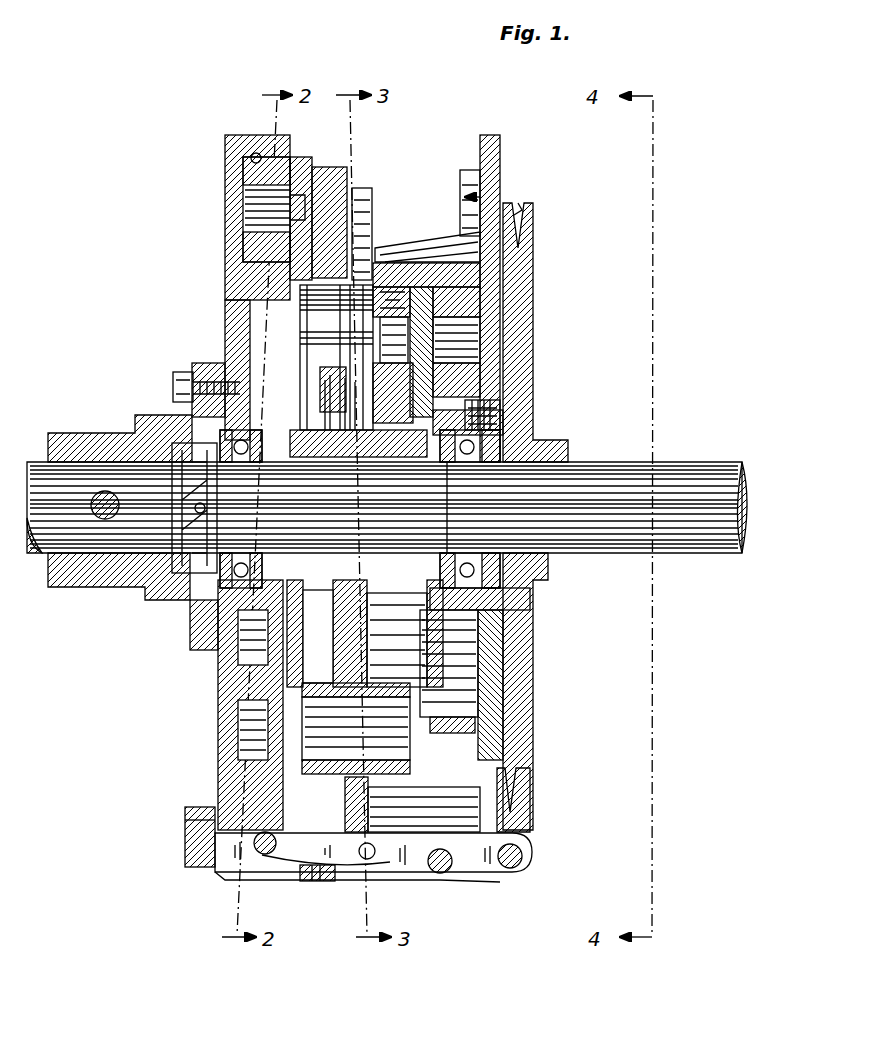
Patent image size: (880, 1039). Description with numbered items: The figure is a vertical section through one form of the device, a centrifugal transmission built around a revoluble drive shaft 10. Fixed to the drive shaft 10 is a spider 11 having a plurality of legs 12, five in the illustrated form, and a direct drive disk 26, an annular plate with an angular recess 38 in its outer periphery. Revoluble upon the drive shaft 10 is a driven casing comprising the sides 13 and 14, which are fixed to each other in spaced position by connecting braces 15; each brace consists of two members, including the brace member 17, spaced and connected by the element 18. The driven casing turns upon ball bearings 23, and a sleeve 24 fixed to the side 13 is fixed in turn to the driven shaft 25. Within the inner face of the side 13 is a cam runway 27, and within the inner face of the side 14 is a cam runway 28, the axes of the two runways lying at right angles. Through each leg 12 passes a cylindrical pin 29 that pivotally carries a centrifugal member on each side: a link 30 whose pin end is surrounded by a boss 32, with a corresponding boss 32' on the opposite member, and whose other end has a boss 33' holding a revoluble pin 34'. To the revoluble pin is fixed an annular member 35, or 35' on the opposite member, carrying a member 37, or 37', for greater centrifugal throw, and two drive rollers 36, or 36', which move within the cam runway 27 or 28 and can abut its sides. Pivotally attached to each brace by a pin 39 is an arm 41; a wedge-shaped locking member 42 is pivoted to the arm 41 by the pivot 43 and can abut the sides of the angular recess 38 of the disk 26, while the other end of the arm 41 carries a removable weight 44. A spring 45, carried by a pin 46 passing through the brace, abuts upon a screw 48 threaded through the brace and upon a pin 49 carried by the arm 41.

The drive shaft 10 is at (655, 490).
The spider 11 is at (222, 650).
The leg 12 is at (490, 362).
The driven casing side 13 is at (225, 265).
The driven casing side 14 is at (500, 178).
The connecting brace 15 is at (485, 197).
The brace member 17 is at (470, 180).
The connecting element 18 is at (362, 205).
The ball bearing 23 is at (505, 433).
The sleeve 24 is at (102, 440).
The driven shaft 25 is at (82, 537).
The direct drive disk 26 is at (530, 268).
The cam runway 27 is at (252, 155).
The cam runway 28 is at (485, 402).
The cylindrical pin 29 is at (302, 778).
The link 30 is at (322, 395).
The boss 32 is at (281, 517).
The boss 32' is at (278, 738).
The boss 33' is at (516, 315).
The revoluble pin 34' is at (426, 220).
The annular member 35 is at (316, 156).
The annular member 35' is at (526, 495).
The drive roller 36 is at (232, 209).
The drive roller 36' is at (516, 502).
The centrifugal throw member 37 is at (360, 367).
The centrifugal throw member 37' is at (414, 295).
The angular recess 38 is at (520, 212).
The pin 39 is at (462, 875).
The arm 41 is at (418, 870).
The wedge-shaped locking member 42 is at (520, 816).
The pivot 43 is at (522, 854).
The removable weight 44 is at (188, 836).
The spring 45 is at (295, 862).
The pin 46 is at (262, 852).
The screw 48 is at (322, 882).
The pin 49 is at (360, 862).